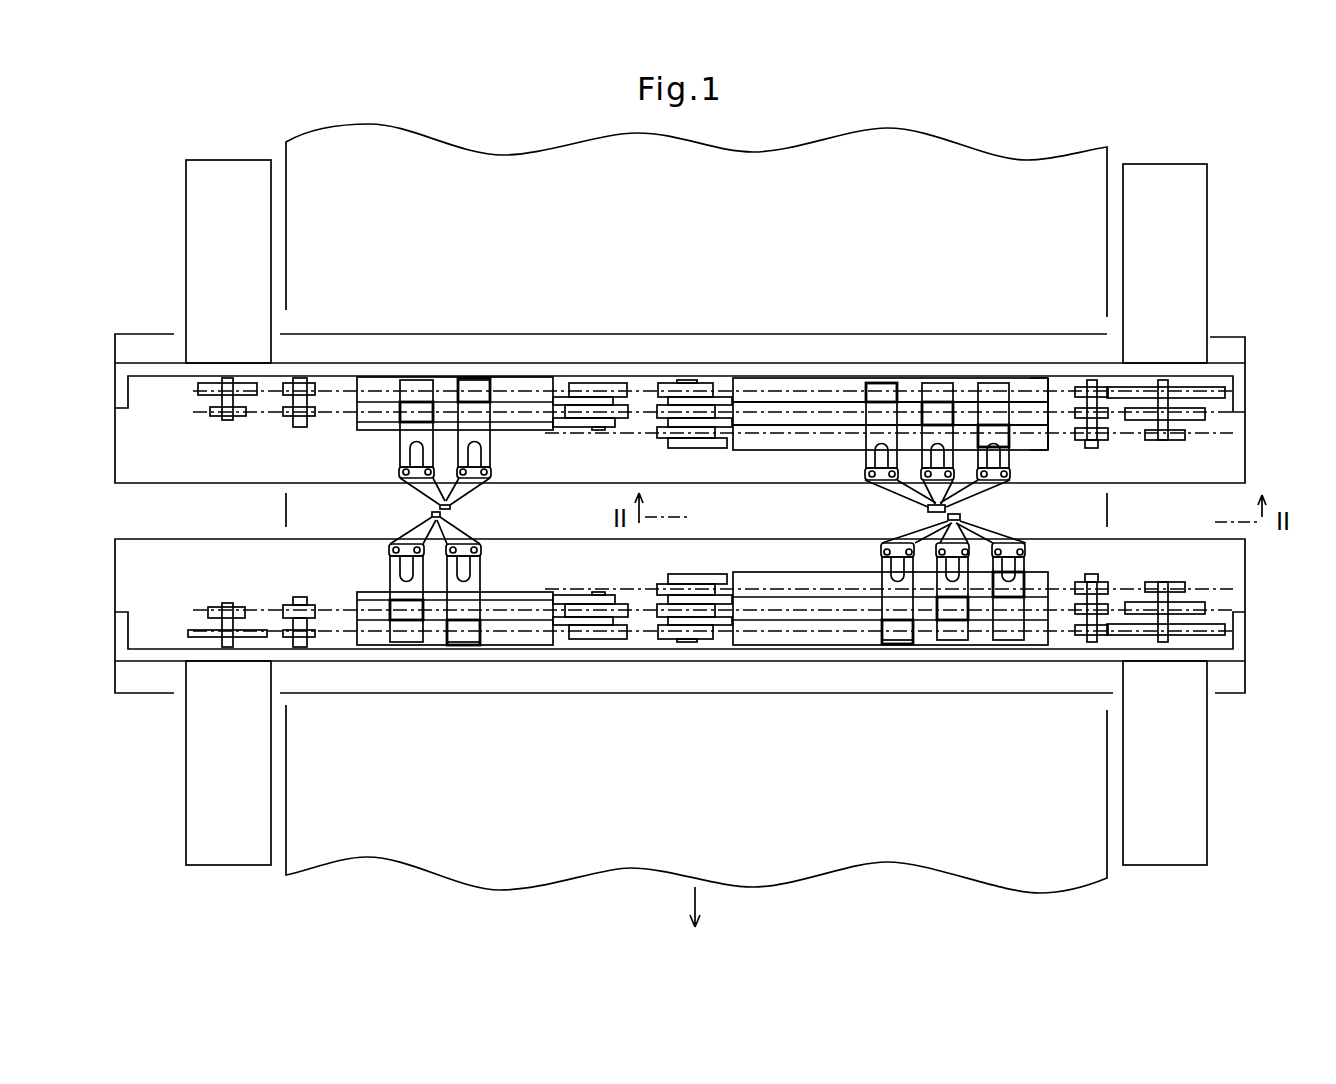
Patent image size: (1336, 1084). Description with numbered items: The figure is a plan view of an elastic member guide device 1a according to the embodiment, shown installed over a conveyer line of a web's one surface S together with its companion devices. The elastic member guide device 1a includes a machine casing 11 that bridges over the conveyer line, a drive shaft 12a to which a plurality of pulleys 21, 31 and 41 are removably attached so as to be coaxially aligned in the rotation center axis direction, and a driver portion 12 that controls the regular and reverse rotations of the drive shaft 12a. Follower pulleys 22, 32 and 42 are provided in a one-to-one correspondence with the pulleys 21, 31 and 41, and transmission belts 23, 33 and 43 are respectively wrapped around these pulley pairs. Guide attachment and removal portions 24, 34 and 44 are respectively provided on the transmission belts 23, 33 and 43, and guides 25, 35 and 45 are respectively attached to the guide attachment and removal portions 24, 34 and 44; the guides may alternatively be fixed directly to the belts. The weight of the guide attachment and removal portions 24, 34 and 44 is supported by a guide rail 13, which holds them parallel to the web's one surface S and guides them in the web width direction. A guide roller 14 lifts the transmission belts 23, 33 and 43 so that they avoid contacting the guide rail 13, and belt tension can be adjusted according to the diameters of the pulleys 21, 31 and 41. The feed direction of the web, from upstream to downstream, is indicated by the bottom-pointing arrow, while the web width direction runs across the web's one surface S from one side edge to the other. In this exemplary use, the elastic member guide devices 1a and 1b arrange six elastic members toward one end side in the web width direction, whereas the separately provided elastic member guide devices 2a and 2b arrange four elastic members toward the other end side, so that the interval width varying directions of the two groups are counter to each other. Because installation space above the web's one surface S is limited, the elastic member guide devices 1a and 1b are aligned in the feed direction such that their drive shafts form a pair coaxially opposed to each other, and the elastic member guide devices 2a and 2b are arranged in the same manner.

The elastic member guide device 1a is at (1232, 339).
The elastic member guide device 1b is at (1230, 690).
The elastic member guide device 2a is at (157, 339).
The elastic member guide device 2b is at (149, 685).
The machine casing 11 is at (528, 372).
The driver portion 12 is at (1195, 200).
The drive shaft 12a is at (1165, 387).
The guide rail 13 is at (1032, 388).
The guide roller 14 is at (1090, 387).
The pulley 21 is at (1210, 395).
The pulley 31 is at (1190, 418).
The pulley 41 is at (1175, 438).
The follower pulley 22 is at (698, 385).
The follower pulley 32 is at (665, 407).
The follower pulley 42 is at (653, 428).
The transmission belt 23 is at (822, 390).
The transmission belt 33 is at (787, 410).
The transmission belt 43 is at (743, 432).
The guide attachment and removal portion 24 is at (880, 423).
The guide attachment and removal portion 34 is at (940, 395).
The guide attachment and removal portion 44 is at (993, 418).
The guide 25 is at (899, 485).
The guide 35 is at (945, 487).
The guide 45 is at (983, 495).
The web's one surface S is at (1087, 868).